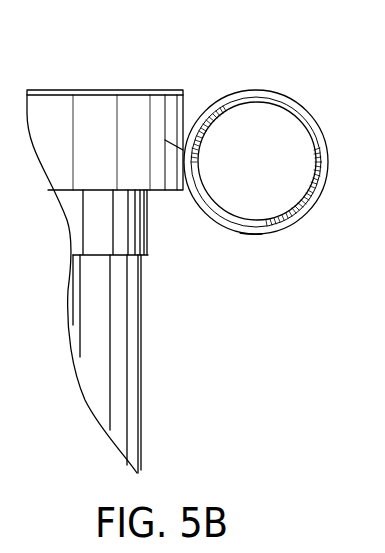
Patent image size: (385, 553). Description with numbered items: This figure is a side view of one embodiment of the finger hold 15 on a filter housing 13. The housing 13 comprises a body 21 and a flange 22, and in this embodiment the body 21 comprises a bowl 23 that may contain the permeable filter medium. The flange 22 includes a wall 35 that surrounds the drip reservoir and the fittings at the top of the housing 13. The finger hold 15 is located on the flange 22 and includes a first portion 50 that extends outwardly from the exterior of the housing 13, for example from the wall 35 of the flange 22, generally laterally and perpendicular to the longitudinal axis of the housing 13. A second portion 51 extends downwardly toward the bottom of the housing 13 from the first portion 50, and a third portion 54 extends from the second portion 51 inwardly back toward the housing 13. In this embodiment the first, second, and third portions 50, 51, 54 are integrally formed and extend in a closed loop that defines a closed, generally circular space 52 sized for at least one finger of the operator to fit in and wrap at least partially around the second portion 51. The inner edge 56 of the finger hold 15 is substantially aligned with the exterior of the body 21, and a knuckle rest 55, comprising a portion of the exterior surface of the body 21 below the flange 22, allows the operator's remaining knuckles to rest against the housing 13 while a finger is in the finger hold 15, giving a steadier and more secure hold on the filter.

The housing 13 is at (118, 308).
The finger hold 15 is at (315, 120).
The body 21 is at (120, 360).
The flange 22 is at (52, 117).
The bowl 23 is at (120, 412).
The wall 35 is at (97, 113).
The first portion 50 is at (250, 92).
The second portion 51 is at (322, 190).
The space 52 is at (262, 198).
The third portion 54 is at (248, 235).
The knuckle rest 55 is at (147, 270).
The inner edge 56 is at (183, 156).